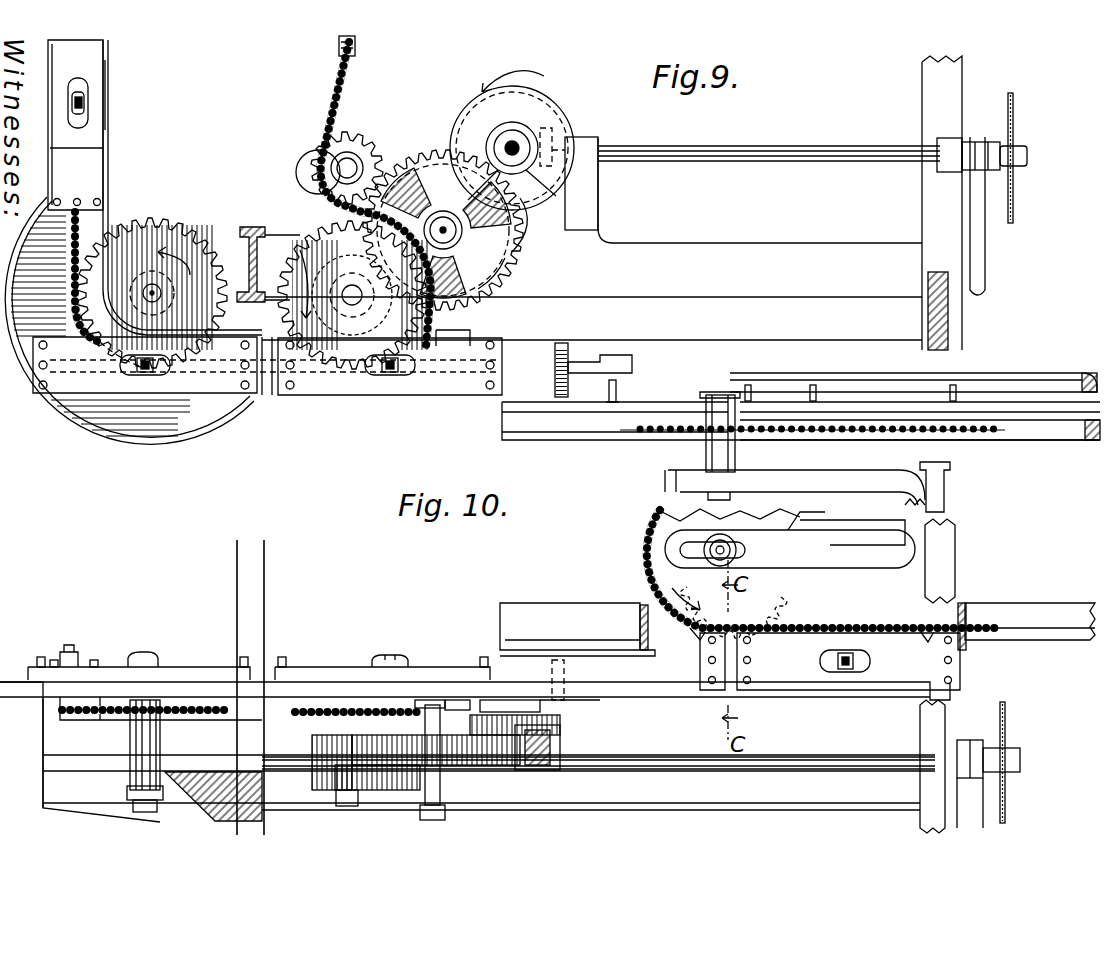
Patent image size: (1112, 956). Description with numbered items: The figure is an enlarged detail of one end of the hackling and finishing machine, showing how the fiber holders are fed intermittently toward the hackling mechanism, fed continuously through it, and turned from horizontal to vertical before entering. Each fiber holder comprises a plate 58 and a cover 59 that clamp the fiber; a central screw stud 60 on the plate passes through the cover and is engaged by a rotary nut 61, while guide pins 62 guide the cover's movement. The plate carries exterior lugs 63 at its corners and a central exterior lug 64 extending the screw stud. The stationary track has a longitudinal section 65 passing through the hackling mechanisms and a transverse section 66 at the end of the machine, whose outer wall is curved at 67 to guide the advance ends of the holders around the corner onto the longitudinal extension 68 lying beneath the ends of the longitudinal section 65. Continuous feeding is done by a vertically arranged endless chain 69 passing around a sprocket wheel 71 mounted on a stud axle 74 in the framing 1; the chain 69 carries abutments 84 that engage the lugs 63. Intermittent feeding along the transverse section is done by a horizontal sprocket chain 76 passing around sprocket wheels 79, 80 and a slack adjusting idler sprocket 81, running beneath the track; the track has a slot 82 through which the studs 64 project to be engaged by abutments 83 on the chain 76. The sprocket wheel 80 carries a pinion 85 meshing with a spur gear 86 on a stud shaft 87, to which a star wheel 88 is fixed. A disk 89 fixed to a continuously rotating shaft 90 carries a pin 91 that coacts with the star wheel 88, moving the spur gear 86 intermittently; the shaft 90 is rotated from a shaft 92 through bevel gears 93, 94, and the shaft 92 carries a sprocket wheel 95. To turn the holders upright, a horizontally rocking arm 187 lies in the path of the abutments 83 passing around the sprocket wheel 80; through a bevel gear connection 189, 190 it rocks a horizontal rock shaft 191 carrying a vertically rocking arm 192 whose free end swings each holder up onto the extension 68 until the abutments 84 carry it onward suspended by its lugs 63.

In FIG. 9, the framing 1 is at (935, 212).
In FIG. 10, the framing 1 is at (970, 766).
In FIG. 9, the plate 58 is at (682, 402).
In FIG. 9, the cover 59 is at (548, 444).
In FIG. 9, the screw stud 60 is at (86, 105).
In FIG. 10, the screw stud 60 is at (390, 660).
In FIG. 9, the rotary nut 61 is at (87, 96).
In FIG. 10, the rotary nut 61 is at (420, 655).
In FIG. 9, the guide pins 62 is at (78, 200).
In FIG. 10, the guide pins 62 is at (749, 662).
In FIG. 9, the exterior lugs 63 is at (240, 233).
In FIG. 10, the exterior lugs 63 is at (702, 661).
In FIG. 9, the exterior lug 64 is at (616, 393).
In FIG. 9, the longitudinal section of the track 65 is at (1075, 425).
In FIG. 10, the longitudinal section of the track 65 is at (985, 642).
In FIG. 9, the transverse section of the track 66 is at (108, 90).
In FIG. 9, the curved outer wall 67 is at (120, 432).
In FIG. 10, the curved outer wall 67 is at (48, 690).
In FIG. 9, the longitudinal extension 68 is at (592, 336).
In FIG. 9, the chain 69 is at (968, 432).
In FIG. 10, the chain 69 is at (840, 626).
In FIG. 9, the sprocket wheel 71 is at (702, 434).
In FIG. 10, the sprocket wheel 71 is at (660, 546).
In FIG. 10, the stud axle 74 is at (668, 513).
In FIG. 9, the sprocket chain 76 is at (335, 96).
In FIG. 10, the sprocket chain 76 is at (180, 702).
In FIG. 9, the sprocket wheel 79 is at (152, 293).
In FIG. 10, the sprocket wheel 79 is at (170, 722).
In FIG. 9, the sprocket wheel 80 is at (353, 295).
In FIG. 10, the sprocket wheel 80 is at (335, 720).
In FIG. 9, the slack adjusting idler sprocket 81 is at (352, 145).
In FIG. 9, the slot 82 is at (72, 283).
In FIG. 9, the abutments 83 is at (356, 48).
In FIG. 10, the abutments 84 is at (700, 638).
In FIG. 9, the pinion 85 is at (405, 345).
In FIG. 10, the pinion 85 is at (335, 750).
In FIG. 9, the spur gear 86 is at (460, 238).
In FIG. 10, the spur gear 86 is at (420, 747).
In FIG. 9, the stud shaft 87 is at (492, 274).
In FIG. 9, the star wheel 88 is at (446, 233).
In FIG. 10, the star wheel 88 is at (392, 747).
In FIG. 9, the disk 89 is at (532, 222).
In FIG. 10, the disk 89 is at (560, 724).
In FIG. 9, the continuously rotating shaft 90 is at (514, 146).
In FIG. 9, the pin 91 is at (522, 233).
In FIG. 9, the shaft 92 is at (773, 152).
In FIG. 10, the shaft 92 is at (852, 764).
In FIG. 9, the bevel gear 93 is at (548, 132).
In FIG. 10, the bevel gear 93 is at (530, 767).
In FIG. 9, the bevel gear 94 is at (500, 140).
In FIG. 9, the sprocket wheel 95 is at (1013, 198).
In FIG. 10, the sprocket wheel 95 is at (1006, 736).
In FIG. 9, the horizontally rocking arm 187 is at (458, 338).
In FIG. 10, the horizontally rocking arm 187 is at (450, 737).
In FIG. 10, the bevel gear 189 is at (430, 700).
In FIG. 10, the bevel gear 190 is at (442, 706).
In FIG. 10, the rock shaft 191 is at (508, 707).
In FIG. 9, the vertically rocking arm 192 is at (563, 355).
In FIG. 10, the vertically rocking arm 192 is at (565, 702).